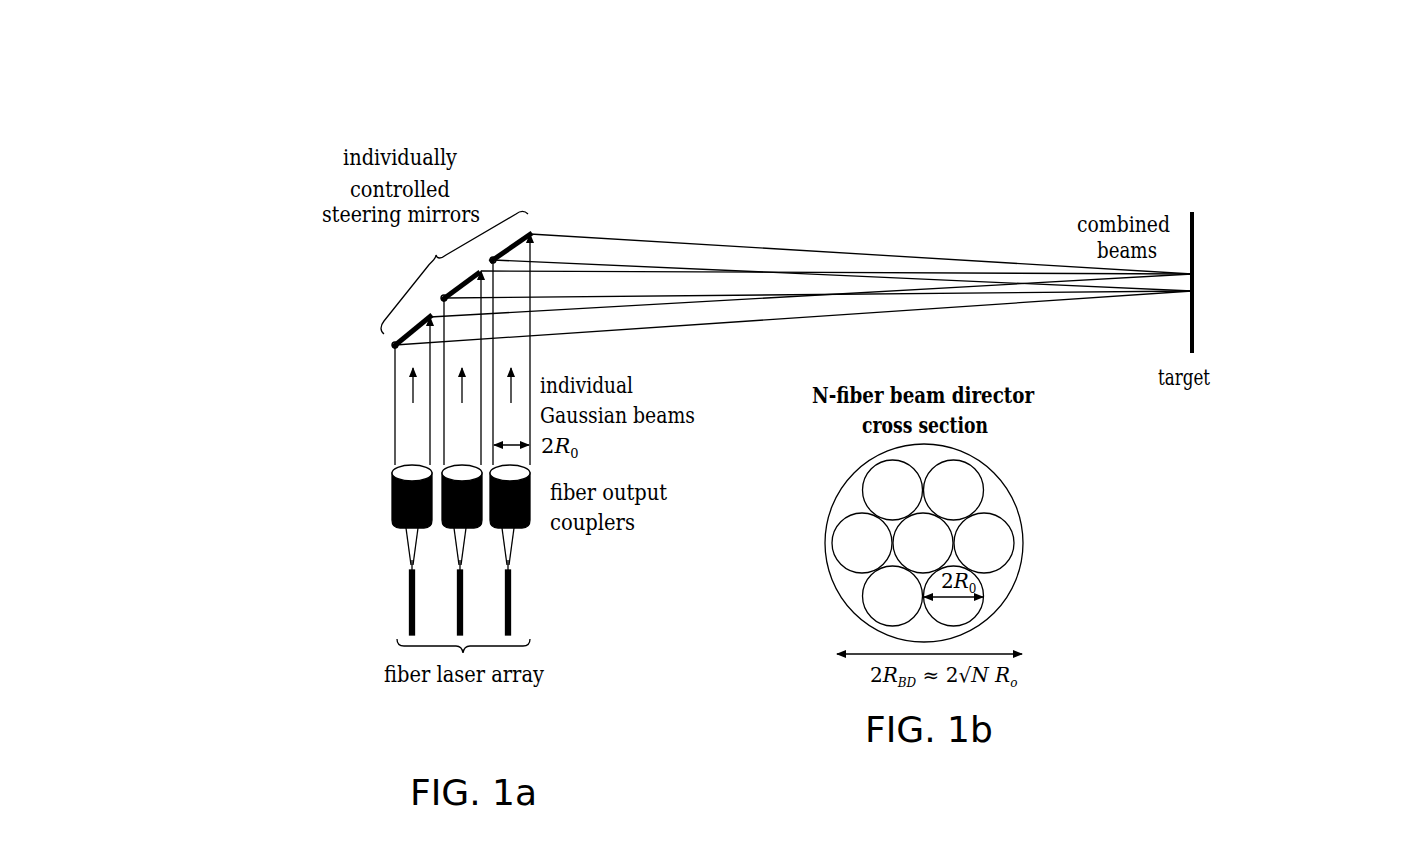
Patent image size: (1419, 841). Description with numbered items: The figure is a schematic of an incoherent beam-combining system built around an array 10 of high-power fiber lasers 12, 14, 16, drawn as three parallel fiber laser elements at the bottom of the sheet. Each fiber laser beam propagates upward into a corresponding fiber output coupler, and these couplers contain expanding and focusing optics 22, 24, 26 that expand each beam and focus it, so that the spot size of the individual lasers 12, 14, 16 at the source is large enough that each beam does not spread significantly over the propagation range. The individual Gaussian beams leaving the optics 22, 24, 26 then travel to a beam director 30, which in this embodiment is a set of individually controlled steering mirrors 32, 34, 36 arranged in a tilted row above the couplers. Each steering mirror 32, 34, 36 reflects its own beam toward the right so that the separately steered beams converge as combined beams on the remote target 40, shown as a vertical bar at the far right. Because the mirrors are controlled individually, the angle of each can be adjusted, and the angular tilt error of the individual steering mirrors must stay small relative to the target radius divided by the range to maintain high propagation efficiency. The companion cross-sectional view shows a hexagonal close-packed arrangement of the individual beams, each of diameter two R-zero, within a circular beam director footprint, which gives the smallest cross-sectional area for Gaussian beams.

The array 10 is at (309, 636).
The fiber laser 12 is at (393, 577).
The fiber laser 14 is at (445, 590).
The fiber laser 16 is at (493, 603).
The fiber output coupler 22 is at (490, 498).
The fiber output coupler 24 is at (442, 508).
The fiber output coupler 26 is at (392, 522).
The beam director 30 is at (410, 246).
The steering mirror 32 is at (390, 333).
The steering mirror 34 is at (440, 280).
The steering mirror 36 is at (505, 243).
The target 40 is at (1202, 352).